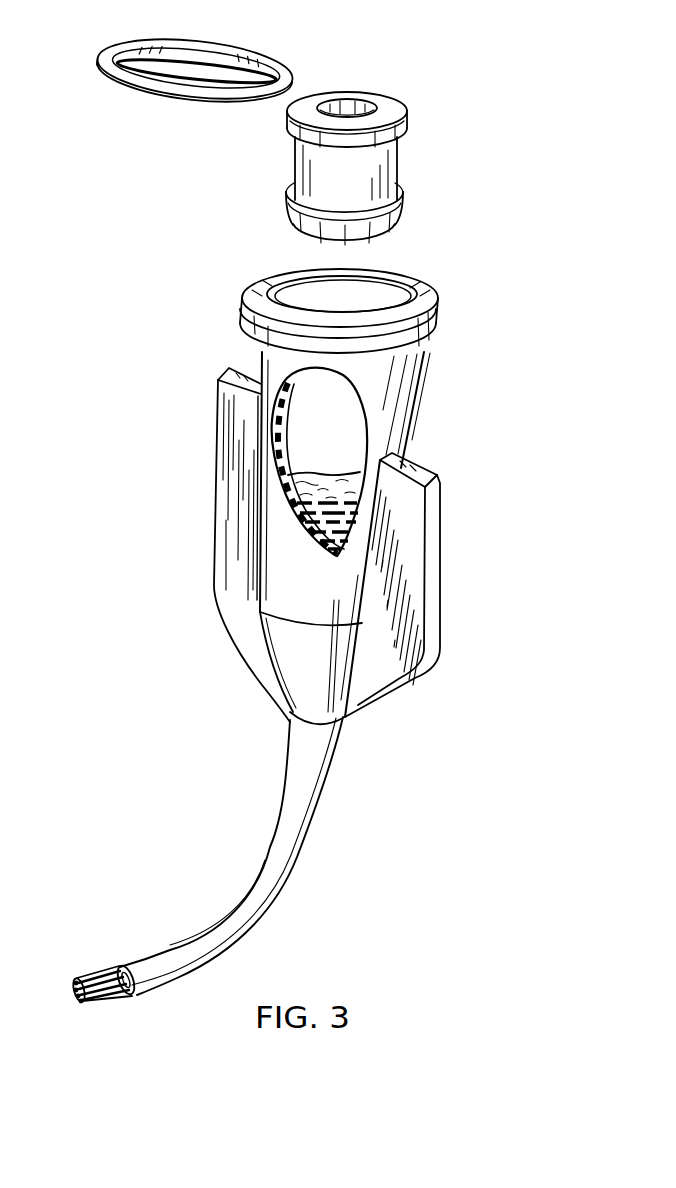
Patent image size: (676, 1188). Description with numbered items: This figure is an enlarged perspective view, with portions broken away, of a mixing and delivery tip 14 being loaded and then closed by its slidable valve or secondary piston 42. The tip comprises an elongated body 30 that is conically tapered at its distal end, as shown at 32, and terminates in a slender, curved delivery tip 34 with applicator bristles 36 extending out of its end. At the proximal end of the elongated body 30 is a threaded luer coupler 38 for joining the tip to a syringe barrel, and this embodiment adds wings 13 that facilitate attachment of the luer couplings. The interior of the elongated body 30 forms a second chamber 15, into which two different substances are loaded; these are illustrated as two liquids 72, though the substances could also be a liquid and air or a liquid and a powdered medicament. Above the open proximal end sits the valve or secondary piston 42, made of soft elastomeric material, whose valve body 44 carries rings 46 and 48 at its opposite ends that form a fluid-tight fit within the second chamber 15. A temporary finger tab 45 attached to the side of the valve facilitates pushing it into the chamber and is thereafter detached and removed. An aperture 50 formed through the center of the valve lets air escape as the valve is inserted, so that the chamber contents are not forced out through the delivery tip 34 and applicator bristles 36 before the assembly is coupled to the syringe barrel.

The wings 13 is at (227, 410).
The mixing and delivery tip 14 is at (468, 479).
The second chamber 15 is at (336, 438).
The elongated body 30 is at (293, 563).
The conically tapered distal end 32 is at (303, 655).
The delivery tip 34 is at (290, 858).
The applicator bristles 36 is at (105, 972).
The threaded luer coupler 38 is at (437, 325).
The slidable valve or secondary piston 42 is at (420, 157).
The valve body 44 is at (398, 162).
The temporary finger tab 45 is at (172, 97).
The ring 46 is at (398, 220).
The ring 48 is at (407, 120).
The aperture 50 is at (360, 99).
The two liquids 72 is at (336, 476).